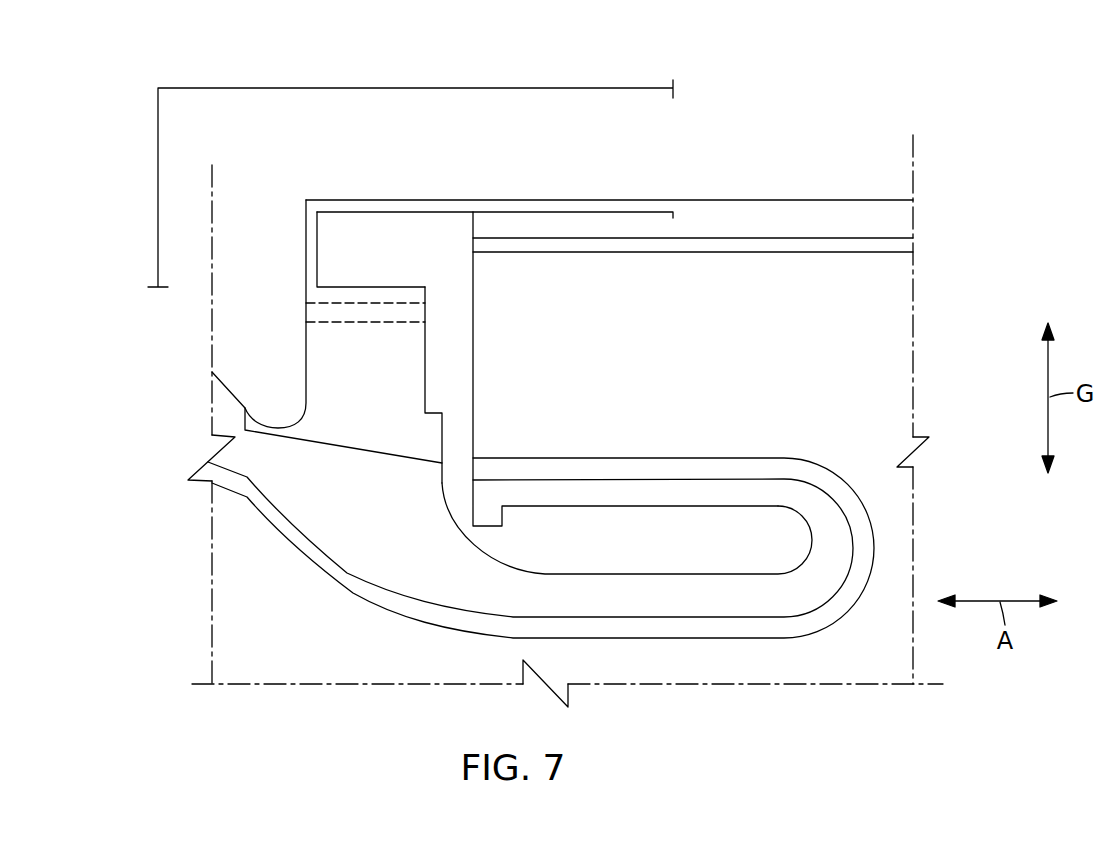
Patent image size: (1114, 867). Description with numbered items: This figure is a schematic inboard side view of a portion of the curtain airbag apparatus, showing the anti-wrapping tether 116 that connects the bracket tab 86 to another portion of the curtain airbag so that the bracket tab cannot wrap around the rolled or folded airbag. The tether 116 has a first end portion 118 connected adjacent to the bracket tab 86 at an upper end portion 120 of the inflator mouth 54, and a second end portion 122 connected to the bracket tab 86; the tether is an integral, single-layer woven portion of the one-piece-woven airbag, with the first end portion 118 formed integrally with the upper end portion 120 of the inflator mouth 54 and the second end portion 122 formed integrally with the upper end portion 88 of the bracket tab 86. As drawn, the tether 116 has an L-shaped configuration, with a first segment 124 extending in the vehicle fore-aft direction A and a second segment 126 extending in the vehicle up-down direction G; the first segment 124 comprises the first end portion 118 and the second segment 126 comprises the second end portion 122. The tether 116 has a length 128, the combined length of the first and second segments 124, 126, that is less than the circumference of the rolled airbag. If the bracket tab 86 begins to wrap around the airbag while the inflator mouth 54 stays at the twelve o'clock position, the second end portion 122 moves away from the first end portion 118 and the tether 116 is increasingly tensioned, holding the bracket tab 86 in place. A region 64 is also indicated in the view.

The inflator mouth 54 is at (880, 210).
The cooling passage 64 is at (465, 362).
The bracket tab 86 is at (315, 350).
The upper end portion of the bracket tab 88 is at (312, 297).
The anti-wrapping tether 116 is at (325, 205).
The first end portion 118 is at (587, 205).
The upper end portion of the inflator mouth 120 is at (803, 217).
The second end portion 122 is at (312, 223).
The first segment 124 is at (515, 205).
The second segment 126 is at (312, 260).
The length 128 is at (392, 88).